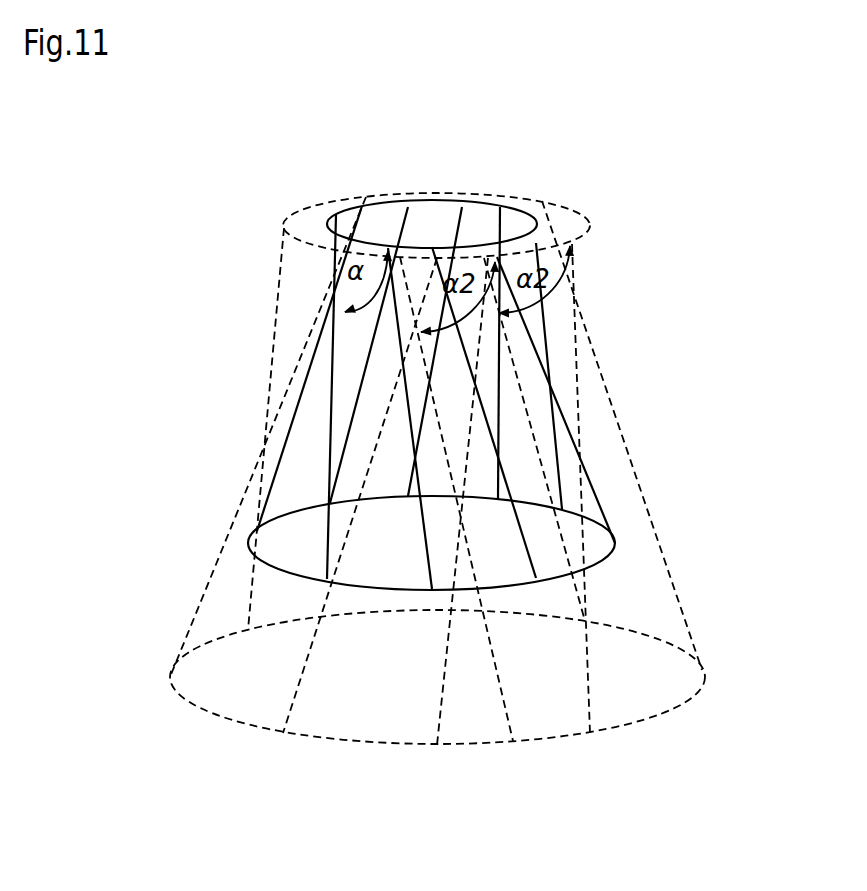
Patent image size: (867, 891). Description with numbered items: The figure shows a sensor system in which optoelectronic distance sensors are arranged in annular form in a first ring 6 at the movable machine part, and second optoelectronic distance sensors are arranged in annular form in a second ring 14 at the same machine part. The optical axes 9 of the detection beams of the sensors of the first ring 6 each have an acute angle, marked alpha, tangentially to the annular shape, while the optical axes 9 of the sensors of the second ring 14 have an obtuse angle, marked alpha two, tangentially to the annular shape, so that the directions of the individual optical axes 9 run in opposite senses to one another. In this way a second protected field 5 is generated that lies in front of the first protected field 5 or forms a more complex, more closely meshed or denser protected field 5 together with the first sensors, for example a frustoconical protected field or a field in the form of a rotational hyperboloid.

The protected field 5 is at (558, 311).
The first ring 6 is at (497, 201).
The optical axes 9 is at (331, 537).
The second ring 14 is at (592, 217).